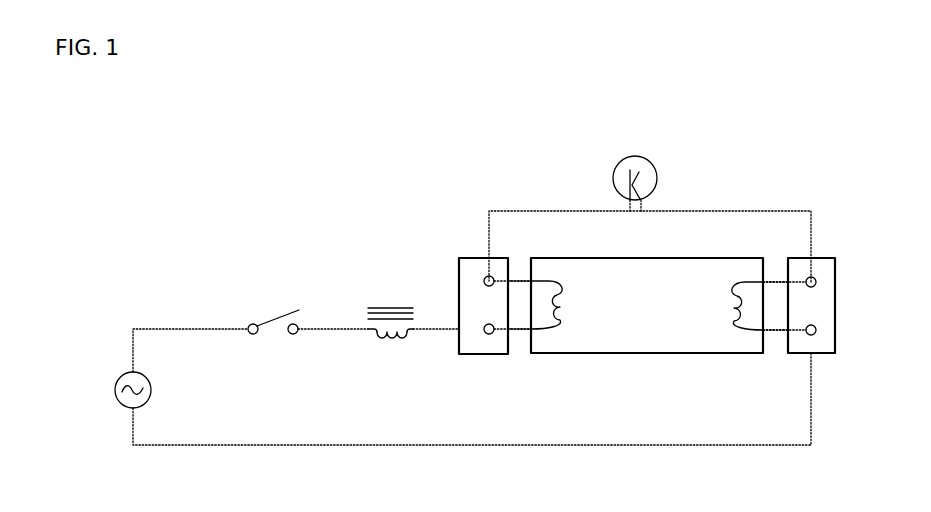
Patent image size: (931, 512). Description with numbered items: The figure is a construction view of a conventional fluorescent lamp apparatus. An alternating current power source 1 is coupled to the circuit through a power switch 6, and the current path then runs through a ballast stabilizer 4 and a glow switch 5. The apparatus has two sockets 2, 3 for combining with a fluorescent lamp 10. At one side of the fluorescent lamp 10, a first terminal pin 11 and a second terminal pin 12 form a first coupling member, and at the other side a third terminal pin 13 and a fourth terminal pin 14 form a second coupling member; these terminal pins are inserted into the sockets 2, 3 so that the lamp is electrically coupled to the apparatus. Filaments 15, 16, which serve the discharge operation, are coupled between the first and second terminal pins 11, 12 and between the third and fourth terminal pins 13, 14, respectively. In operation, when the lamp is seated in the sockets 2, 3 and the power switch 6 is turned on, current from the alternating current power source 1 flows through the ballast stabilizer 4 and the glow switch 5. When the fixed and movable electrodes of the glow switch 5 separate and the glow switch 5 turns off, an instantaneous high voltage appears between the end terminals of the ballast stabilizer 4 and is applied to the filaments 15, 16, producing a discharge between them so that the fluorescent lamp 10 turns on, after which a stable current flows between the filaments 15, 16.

The alternating current power source 1 is at (115, 386).
The socket 2 is at (459, 264).
The socket 3 is at (835, 302).
The ballast stabilizer 4 is at (389, 345).
The glow switch 5 is at (641, 158).
The power switch 6 is at (281, 306).
The fluorescent lamp 10 is at (703, 256).
The first terminal pin 11 is at (518, 281).
The second terminal pin 12 is at (519, 340).
The third terminal pin 13 is at (775, 282).
The fourth terminal pin 14 is at (776, 335).
The filament 15 is at (562, 297).
The filament 16 is at (739, 318).